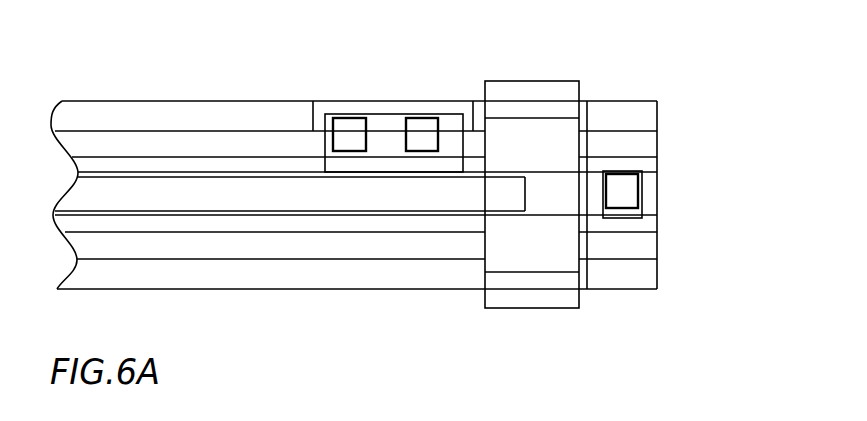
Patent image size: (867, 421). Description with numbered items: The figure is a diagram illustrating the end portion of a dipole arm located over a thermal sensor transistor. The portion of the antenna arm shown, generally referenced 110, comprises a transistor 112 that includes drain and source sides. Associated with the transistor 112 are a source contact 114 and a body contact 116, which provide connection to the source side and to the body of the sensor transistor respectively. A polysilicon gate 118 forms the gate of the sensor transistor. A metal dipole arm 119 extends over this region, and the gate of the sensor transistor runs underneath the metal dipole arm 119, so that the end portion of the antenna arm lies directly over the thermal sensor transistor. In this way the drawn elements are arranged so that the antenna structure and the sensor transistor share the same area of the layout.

The portion of the antenna arm 110 is at (360, 292).
The transistor 112 is at (228, 143).
The source contact 114 is at (420, 135).
The body contact 116 is at (628, 195).
The polysilicon gate 118 is at (529, 88).
The metal dipole arm 119 is at (583, 200).